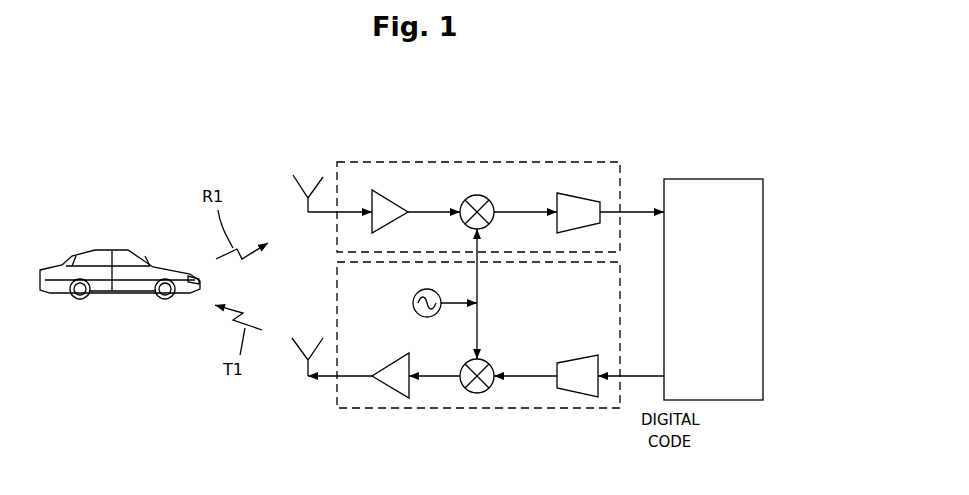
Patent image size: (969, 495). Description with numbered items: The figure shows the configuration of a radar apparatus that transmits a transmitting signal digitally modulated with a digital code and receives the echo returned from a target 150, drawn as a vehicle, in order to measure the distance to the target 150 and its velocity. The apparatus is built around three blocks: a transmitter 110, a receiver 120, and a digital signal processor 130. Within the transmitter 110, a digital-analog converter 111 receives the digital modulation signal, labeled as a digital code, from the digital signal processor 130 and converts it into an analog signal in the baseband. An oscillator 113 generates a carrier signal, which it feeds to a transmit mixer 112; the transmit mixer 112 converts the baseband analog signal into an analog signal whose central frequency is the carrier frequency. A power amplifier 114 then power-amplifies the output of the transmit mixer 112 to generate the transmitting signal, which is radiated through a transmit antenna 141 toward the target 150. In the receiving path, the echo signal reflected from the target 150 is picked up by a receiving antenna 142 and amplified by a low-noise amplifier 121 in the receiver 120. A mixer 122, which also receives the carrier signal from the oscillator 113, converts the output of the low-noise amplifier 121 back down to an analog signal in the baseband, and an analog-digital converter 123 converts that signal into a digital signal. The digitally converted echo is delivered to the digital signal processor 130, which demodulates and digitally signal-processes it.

The transmitter 110 is at (335, 403).
The digital-analog converter 111 is at (573, 393).
The transmit mixer 112 is at (482, 393).
The oscillator 113 is at (413, 301).
The power amplifier 114 is at (383, 387).
The receiver 120 is at (597, 162).
The low-noise amplifier 121 is at (372, 186).
The mixer 122 is at (478, 194).
The analog-digital converter 123 is at (553, 204).
The digital signal processor 130 is at (692, 179).
The transmit antenna 141 is at (298, 355).
The receiving antenna 142 is at (323, 178).
The target 150 is at (105, 252).